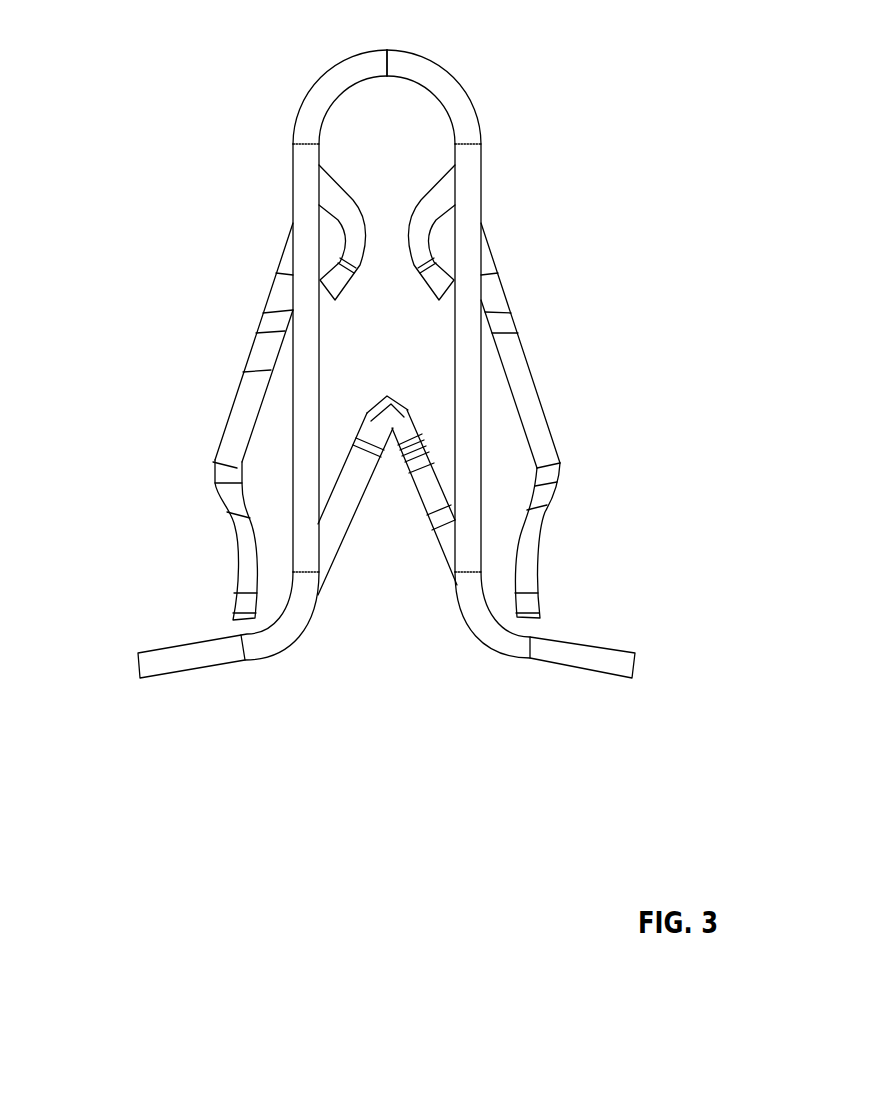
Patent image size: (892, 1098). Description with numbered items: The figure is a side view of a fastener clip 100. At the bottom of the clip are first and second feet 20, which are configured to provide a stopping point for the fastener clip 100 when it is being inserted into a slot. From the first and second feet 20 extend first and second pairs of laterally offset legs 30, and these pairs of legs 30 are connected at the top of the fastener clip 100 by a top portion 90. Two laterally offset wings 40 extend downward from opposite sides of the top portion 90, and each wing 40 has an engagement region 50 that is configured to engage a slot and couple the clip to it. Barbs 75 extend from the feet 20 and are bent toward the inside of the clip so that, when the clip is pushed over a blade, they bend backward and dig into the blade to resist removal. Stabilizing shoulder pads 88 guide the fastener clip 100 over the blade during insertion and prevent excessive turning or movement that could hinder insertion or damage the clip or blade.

The fastener clip 100 is at (645, 113).
The top portion 90 is at (444, 93).
The laterally offset legs 30 is at (302, 388).
The feet 20 is at (285, 618).
The wings 40 is at (257, 355).
The engagement region 50 is at (233, 518).
The stabilizing shoulder pads 88 is at (345, 243).
The barbs 75 is at (375, 430).